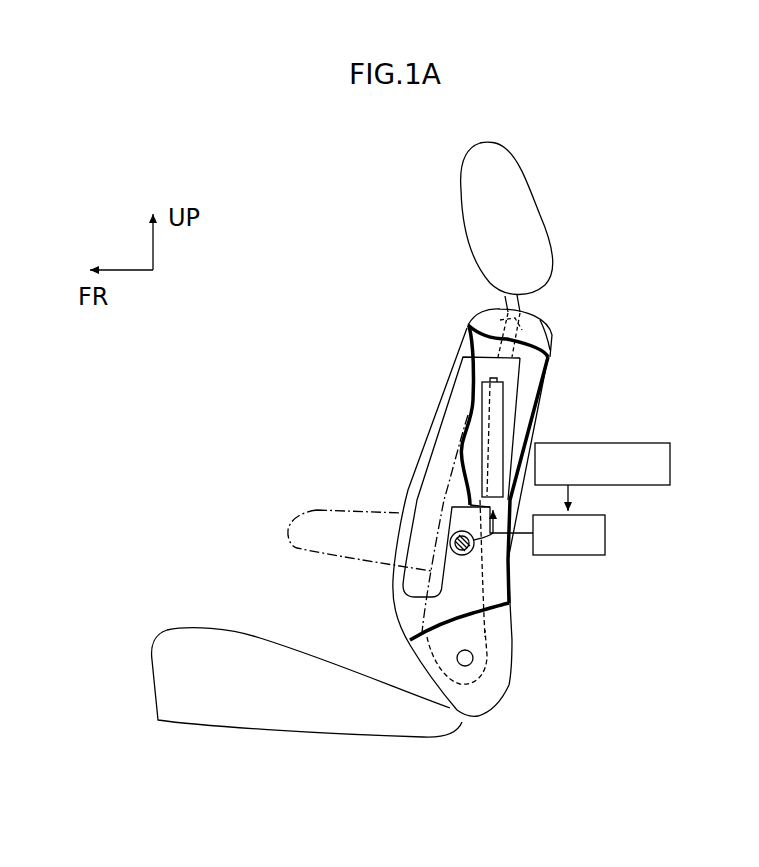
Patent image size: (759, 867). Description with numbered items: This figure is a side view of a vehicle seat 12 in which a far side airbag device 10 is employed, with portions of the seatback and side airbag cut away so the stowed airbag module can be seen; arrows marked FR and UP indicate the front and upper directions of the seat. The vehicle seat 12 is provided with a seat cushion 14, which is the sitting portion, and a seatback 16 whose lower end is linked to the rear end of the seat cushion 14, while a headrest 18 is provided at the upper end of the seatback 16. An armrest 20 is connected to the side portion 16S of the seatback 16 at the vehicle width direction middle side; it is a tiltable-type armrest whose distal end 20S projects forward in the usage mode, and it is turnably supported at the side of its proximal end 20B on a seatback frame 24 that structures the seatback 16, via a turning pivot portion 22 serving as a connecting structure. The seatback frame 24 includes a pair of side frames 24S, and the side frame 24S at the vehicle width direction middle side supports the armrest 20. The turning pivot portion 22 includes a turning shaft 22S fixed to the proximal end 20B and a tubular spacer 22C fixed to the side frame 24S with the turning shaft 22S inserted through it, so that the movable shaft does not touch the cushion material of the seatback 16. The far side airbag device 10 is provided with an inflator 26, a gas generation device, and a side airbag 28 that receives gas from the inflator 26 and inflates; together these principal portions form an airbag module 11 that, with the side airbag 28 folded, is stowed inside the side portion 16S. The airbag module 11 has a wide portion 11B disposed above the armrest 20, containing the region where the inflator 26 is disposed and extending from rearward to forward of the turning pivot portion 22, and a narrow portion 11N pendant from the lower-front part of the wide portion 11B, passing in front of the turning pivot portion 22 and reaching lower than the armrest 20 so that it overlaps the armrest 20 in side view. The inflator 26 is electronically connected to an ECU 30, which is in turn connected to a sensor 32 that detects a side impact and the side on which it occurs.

The far side airbag device 10 is at (630, 415).
The airbag module 11 is at (332, 335).
The wide portion 11B is at (458, 399).
The narrow portion 11N is at (426, 538).
The vehicle seat 12 is at (311, 290).
The seat cushion 14 is at (169, 648).
The seatback 16 is at (557, 343).
The side portion 16S is at (537, 330).
The headrest 18 is at (513, 223).
The armrest 20 is at (317, 520).
The distal end 20S is at (287, 532).
The proximal end 20B is at (466, 562).
The turning pivot portion 22 is at (509, 603).
The tubular spacer 22C is at (475, 545).
The turning shaft 22S is at (477, 558).
The seatback frame 24 is at (431, 445).
The side frame 24S is at (467, 337).
The inflator 26 is at (495, 395).
The side airbag 28 is at (508, 418).
The ECU 30 is at (607, 537).
The sensor 32 is at (672, 465).